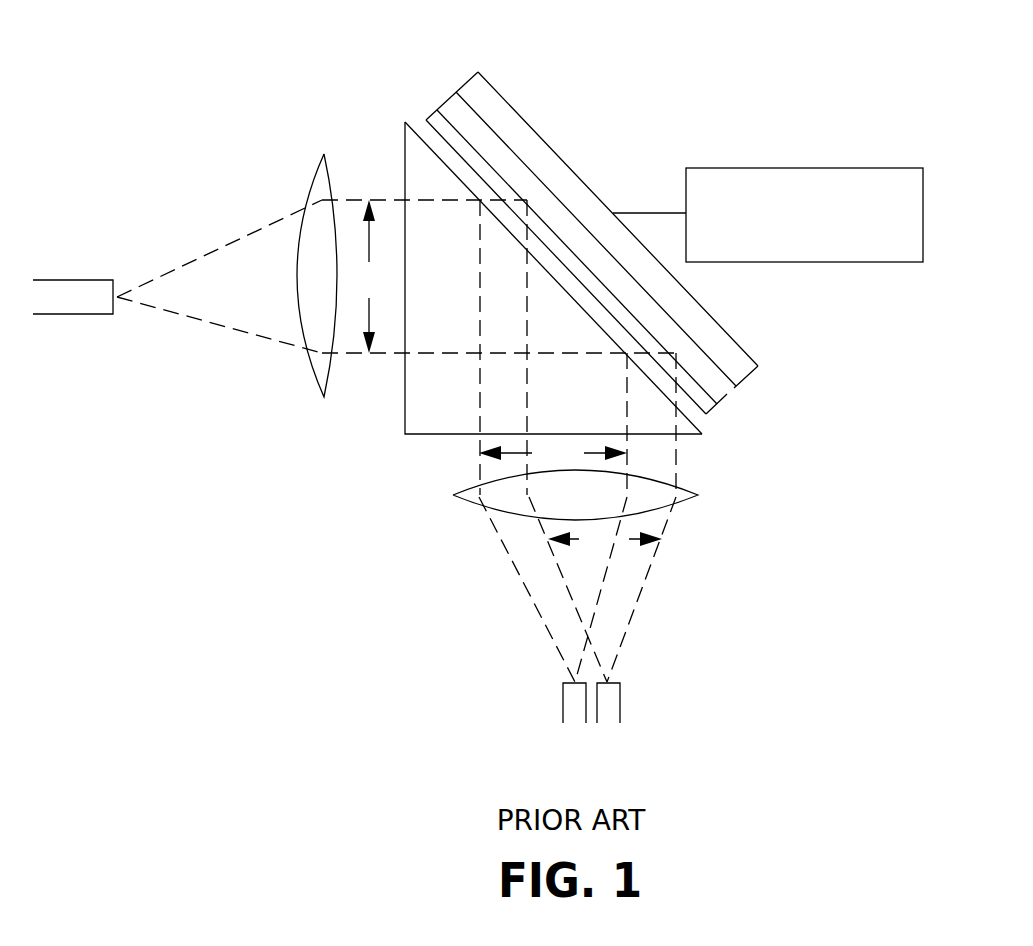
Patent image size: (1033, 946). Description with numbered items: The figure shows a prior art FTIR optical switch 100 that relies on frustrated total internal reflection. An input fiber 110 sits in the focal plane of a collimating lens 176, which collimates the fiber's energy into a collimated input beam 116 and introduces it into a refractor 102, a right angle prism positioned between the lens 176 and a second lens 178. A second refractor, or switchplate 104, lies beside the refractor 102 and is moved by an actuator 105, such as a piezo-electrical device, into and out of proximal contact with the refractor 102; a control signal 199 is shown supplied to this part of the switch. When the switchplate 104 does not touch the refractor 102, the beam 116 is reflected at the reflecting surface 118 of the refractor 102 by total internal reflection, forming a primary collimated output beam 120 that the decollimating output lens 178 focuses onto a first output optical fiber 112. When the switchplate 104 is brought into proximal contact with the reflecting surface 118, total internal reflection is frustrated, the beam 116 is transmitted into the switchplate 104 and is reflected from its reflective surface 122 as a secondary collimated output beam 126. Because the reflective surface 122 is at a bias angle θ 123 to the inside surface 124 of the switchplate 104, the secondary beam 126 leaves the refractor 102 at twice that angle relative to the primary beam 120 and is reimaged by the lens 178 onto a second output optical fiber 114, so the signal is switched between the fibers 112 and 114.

The FTIR optical switch 100 is at (608, 97).
The input fiber 110 is at (89, 293).
The lens 176 is at (320, 188).
The collimated input beam 116 is at (372, 276).
The refractor 102 is at (502, 311).
The reflecting surface 118 is at (562, 290).
The inside surface 124 is at (477, 175).
The reflective surface 122 is at (638, 322).
The switchplate 104 is at (595, 285).
The actuator 105 is at (733, 357).
The bias angle θ 123 is at (657, 343).
The control signal 199 is at (798, 168).
The primary collimated output beam 120 is at (553, 454).
The lens 178 is at (698, 495).
The secondary collimated output beam 126 is at (605, 541).
The first output optical fiber 112 is at (570, 703).
The second output optical fiber 114 is at (610, 702).